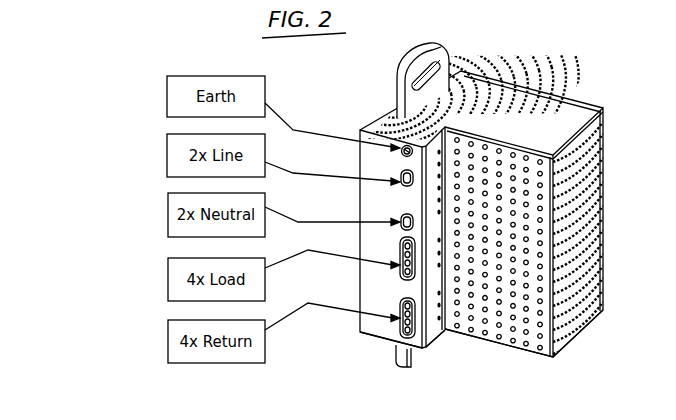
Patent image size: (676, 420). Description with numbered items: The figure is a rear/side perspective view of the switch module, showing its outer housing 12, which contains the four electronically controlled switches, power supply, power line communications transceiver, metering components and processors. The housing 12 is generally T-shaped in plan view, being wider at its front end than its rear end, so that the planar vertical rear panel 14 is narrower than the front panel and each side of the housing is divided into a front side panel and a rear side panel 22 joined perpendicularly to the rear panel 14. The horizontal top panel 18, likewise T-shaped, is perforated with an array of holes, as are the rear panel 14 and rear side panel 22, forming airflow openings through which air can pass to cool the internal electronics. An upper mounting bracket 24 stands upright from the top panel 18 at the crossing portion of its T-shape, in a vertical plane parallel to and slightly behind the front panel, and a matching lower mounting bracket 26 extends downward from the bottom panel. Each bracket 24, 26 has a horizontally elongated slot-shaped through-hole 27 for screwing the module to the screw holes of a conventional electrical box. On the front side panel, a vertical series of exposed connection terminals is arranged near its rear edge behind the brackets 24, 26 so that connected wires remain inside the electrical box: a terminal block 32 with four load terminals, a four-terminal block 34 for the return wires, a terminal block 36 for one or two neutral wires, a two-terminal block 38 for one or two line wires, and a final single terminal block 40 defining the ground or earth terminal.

The outer housing 12 is at (425, 201).
The rear panel 14 is at (590, 187).
The top panel 18 is at (582, 110).
The rear side panel 22 is at (537, 342).
The upper mounting bracket 24 is at (451, 70).
The lower mounting bracket 26 is at (411, 358).
The slot-shaped through-hole 27 is at (436, 80).
The terminal block 32 is at (385, 266).
The four-terminal block 34 is at (388, 330).
The terminal block 36 is at (388, 208).
The two-terminal block 38 is at (389, 164).
The single terminal block 40 is at (407, 146).